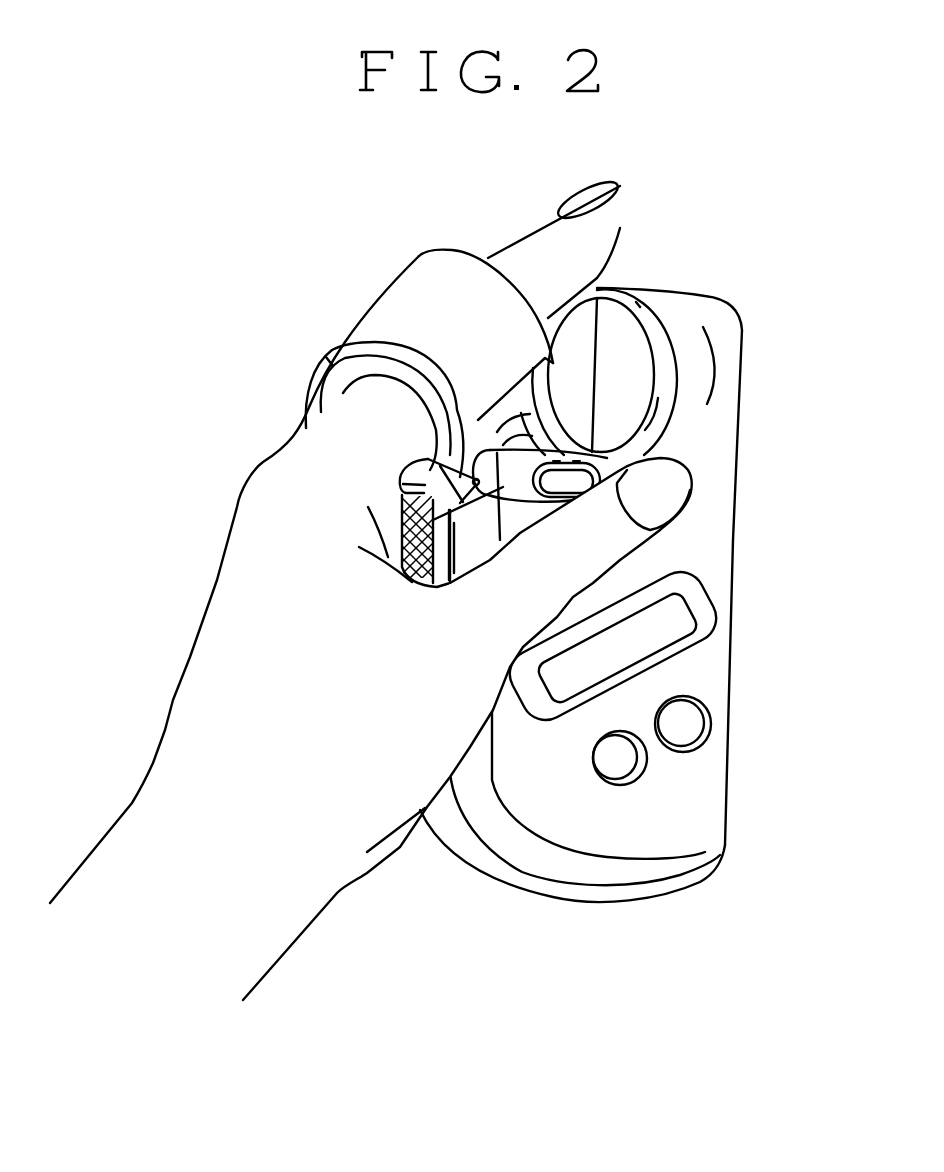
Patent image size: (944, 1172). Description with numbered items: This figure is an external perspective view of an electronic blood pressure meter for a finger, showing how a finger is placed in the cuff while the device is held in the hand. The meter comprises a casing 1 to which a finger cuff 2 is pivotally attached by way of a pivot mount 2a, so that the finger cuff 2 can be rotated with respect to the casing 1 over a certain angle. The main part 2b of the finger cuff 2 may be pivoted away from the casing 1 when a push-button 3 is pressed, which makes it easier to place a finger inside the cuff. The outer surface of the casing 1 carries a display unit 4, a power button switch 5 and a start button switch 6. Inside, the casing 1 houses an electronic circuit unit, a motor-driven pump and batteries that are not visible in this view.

The casing 1 is at (697, 310).
The finger cuff 2 is at (429, 317).
The pivot mount 2a is at (467, 477).
The main part of the finger cuff 2b is at (492, 278).
The push-button 3 is at (605, 455).
The display unit 4 is at (547, 688).
The power button switch 5 is at (608, 770).
The start button switch 6 is at (675, 737).